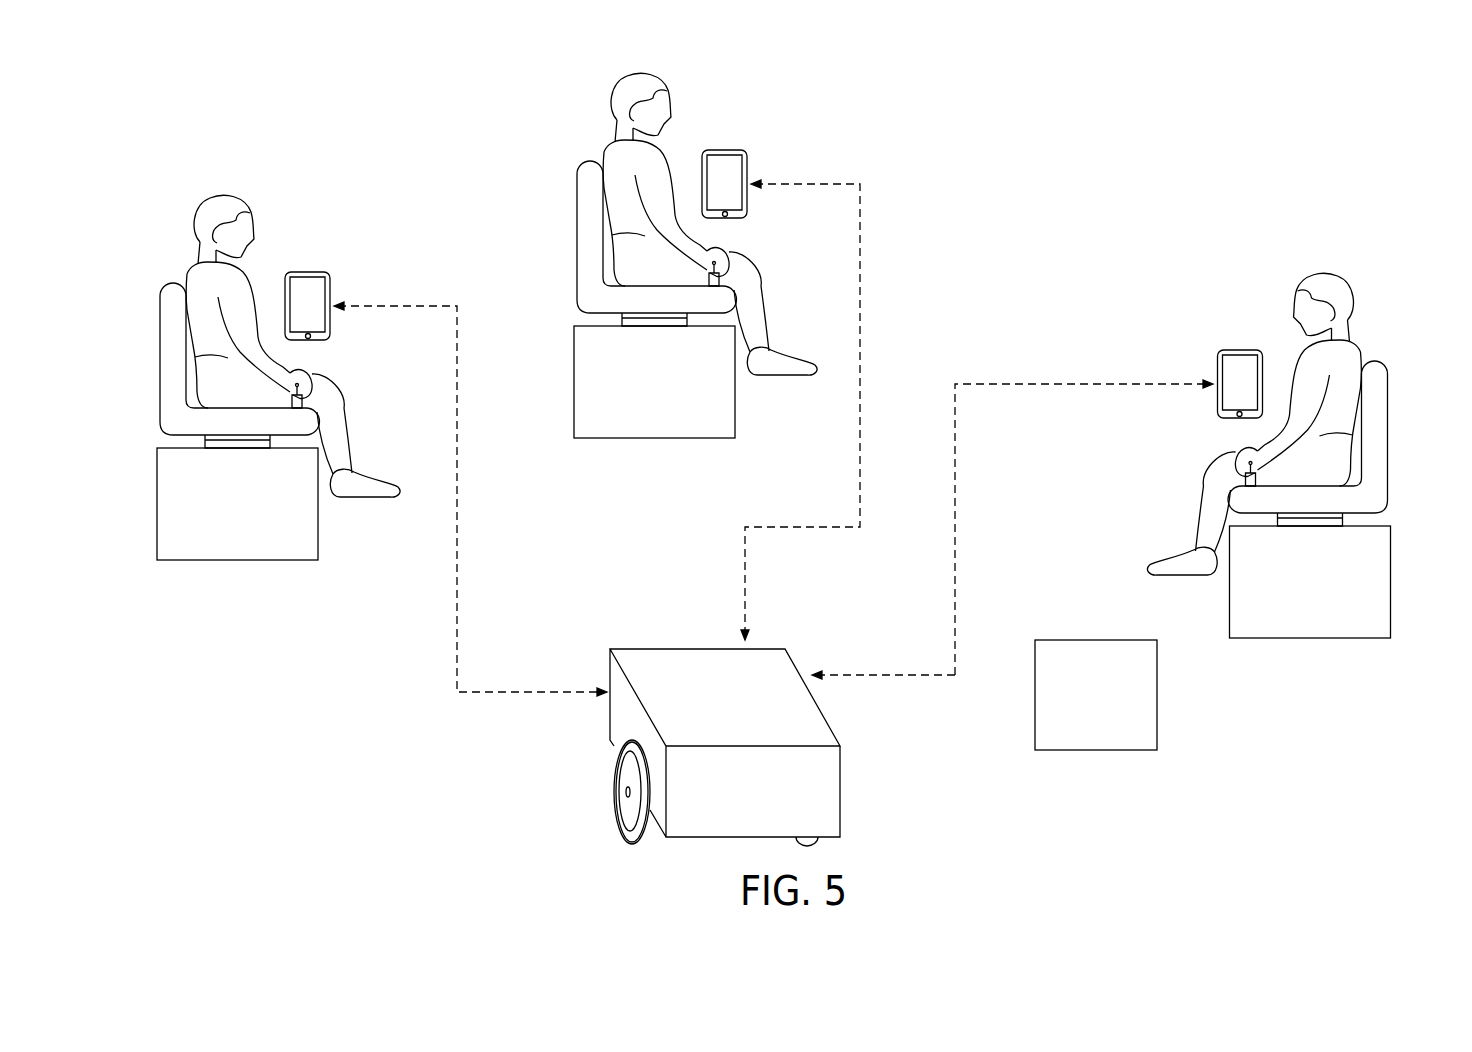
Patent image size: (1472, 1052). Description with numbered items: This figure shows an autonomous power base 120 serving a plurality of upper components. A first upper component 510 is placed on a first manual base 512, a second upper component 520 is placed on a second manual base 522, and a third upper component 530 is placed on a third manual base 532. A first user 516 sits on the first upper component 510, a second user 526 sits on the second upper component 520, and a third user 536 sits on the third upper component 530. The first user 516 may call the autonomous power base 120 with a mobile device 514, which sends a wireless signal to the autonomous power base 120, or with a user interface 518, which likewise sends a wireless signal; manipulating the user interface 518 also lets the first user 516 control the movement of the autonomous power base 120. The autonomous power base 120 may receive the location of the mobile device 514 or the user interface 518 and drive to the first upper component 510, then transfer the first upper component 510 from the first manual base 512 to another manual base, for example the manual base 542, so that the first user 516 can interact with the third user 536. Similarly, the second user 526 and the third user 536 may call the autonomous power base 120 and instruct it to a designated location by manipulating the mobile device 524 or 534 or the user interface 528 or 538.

The first upper component 510 is at (160, 290).
The first manual base 512 is at (152, 553).
The mobile device 514 is at (338, 264).
The first user 516 is at (185, 203).
The user interface 518 is at (330, 382).
The second upper component 520 is at (577, 170).
The second manual base 522 is at (570, 434).
The mobile device 524 is at (750, 140).
The second user 526 is at (602, 82).
The user interface 528 is at (746, 261).
The third upper component 530 is at (1393, 368).
The third manual base 532 is at (1397, 640).
The mobile device 534 is at (1210, 345).
The third user 536 is at (1360, 278).
The user interface 538 is at (1218, 460).
The manual base 542 is at (1098, 633).
The autonomous power base 120 is at (855, 785).